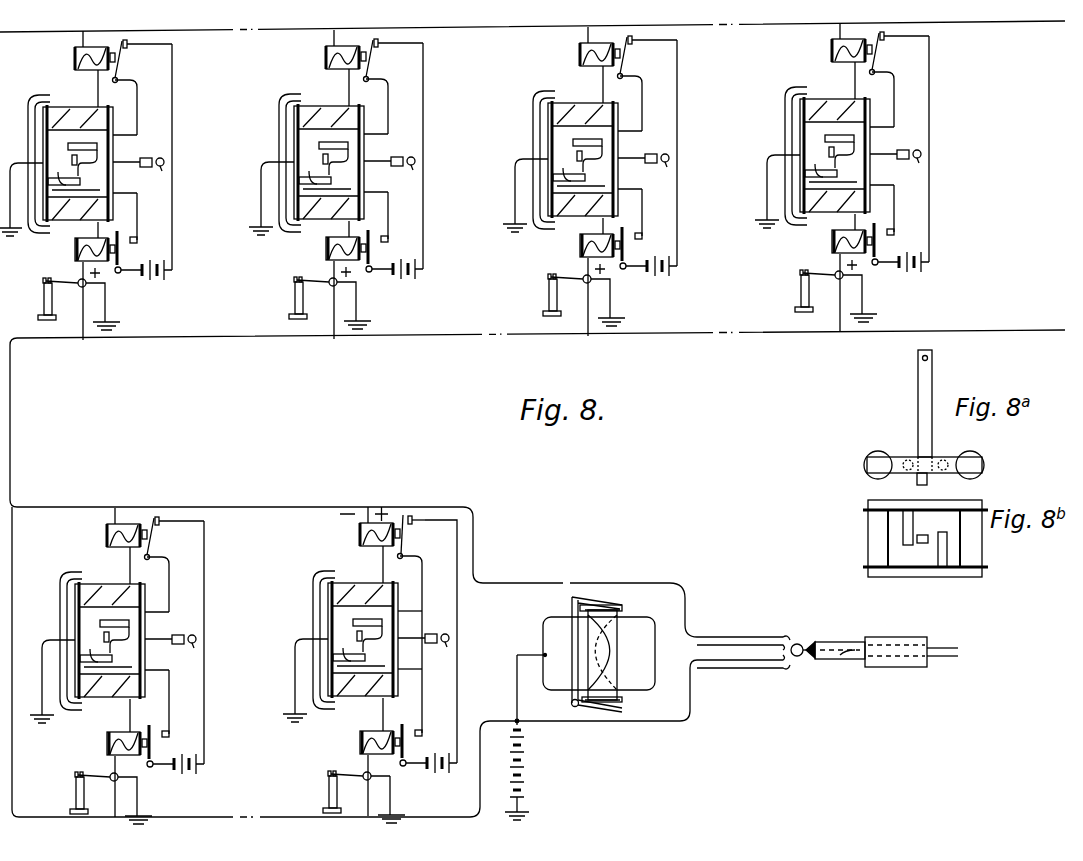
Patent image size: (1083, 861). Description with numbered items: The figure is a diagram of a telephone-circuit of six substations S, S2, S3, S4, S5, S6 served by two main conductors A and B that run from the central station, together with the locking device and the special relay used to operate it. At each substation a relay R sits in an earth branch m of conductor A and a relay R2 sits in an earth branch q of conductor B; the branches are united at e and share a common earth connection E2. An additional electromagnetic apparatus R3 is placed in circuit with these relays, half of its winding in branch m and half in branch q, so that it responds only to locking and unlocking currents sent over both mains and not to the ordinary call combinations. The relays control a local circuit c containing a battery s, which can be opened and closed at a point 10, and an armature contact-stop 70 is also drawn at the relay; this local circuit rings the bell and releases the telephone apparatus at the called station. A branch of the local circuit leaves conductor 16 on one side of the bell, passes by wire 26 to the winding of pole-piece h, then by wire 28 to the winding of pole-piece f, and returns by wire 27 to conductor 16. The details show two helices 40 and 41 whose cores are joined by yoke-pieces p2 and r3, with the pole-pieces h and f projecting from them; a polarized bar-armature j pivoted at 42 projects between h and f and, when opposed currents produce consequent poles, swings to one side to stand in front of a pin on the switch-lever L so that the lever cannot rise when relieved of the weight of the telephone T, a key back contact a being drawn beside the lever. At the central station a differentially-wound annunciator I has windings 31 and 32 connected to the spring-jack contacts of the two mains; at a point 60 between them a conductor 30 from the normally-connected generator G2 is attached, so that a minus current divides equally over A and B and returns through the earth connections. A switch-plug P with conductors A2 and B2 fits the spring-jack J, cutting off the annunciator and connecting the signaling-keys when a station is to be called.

In FIG. 8, the main conductor A is at (532, 295).
In FIG. 8, the main conductor B is at (538, 573).
In FIG. 8, the substation S is at (361, 654).
In FIG. 8, the substation S2 is at (117, 666).
In FIG. 8, the substation S3 is at (86, 185).
In FIG. 8, the substation S4 is at (336, 184).
In FIG. 8, the substation S5 is at (590, 181).
In FIG. 8, the substation S6 is at (842, 177).
In FIG. 8, the relay R is at (371, 535).
In FIG. 8, the relay R2 is at (367, 745).
In FIG. 8, the electromagnetic apparatus (locking-magnet) R3 is at (355, 631).
In FIG. 8A, the electromagnetic apparatus (locking-magnet) R3 is at (924, 450).
In FIG. 8B, the electromagnetic apparatus (locking-magnet) R3 is at (911, 538).
In FIG. 8, the earth branch m is at (370, 542).
In FIG. 8, the armature contact stop 70 is at (423, 504).
In FIG. 8, the contact point 10 is at (429, 742).
In FIG. 8, the local-circuit conductor 16 is at (423, 644).
In FIG. 8, the wire 26 is at (410, 604).
In FIG. 8, the wire 27 is at (410, 660).
In FIG. 8, the wire 28 is at (413, 637).
In FIG. 8, the polar extension (pole-piece) h is at (361, 621).
In FIG. 8B, the polar extension (pole-piece) h is at (914, 527).
In FIG. 8, the polarized bar-armature j is at (349, 637).
In FIG. 8A, the polarized bar-armature j is at (934, 426).
In FIG. 8B, the polarized bar-armature j is at (926, 544).
In FIG. 8, the polar extension (pole-piece) f is at (359, 646).
In FIG. 8B, the polar extension (pole-piece) f is at (946, 534).
In FIG. 8, the junction point e is at (300, 676).
In FIG. 8, the earth connection E2 is at (286, 710).
In FIG. 8, the local circuit c is at (441, 641).
In FIG. 8, the earth branch q is at (375, 740).
In FIG. 8, the battery s is at (431, 770).
In FIG. 8, the switch-lever L is at (360, 782).
In FIG. 8, the telephone T is at (328, 792).
In FIG. 8, the key back contact a is at (395, 799).
In FIG. 8, the differentially-wound annunciator I is at (599, 654).
In FIG. 8, the point between windings 60 is at (541, 655).
In FIG. 8, the conductor 30 is at (527, 690).
In FIG. 8, the differential winding 31 is at (680, 616).
In FIG. 8, the differential winding 32 is at (653, 688).
In FIG. 8, the current-generator G2 is at (533, 775).
In FIG. 8, the spring-jack J is at (750, 633).
In FIG. 8, the switch-plug P is at (896, 637).
In FIG. 8, the plug conductor A2 is at (942, 637).
In FIG. 8, the plug conductor B2 is at (942, 668).
In FIG. 8A, the pivot 42 is at (932, 355).
In FIG. 8A, the electromagnetic helix (coil) 40 is at (867, 470).
In FIG. 8B, the electromagnetic helix (coil) 40 is at (882, 538).
In FIG. 8A, the electromagnetic helix (coil) 41 is at (983, 467).
In FIG. 8B, the electromagnetic helix (coil) 41 is at (969, 538).
In FIG. 8B, the relay top plate p2 is at (893, 506).
In FIG. 8B, the yoke-piece r3 is at (894, 573).